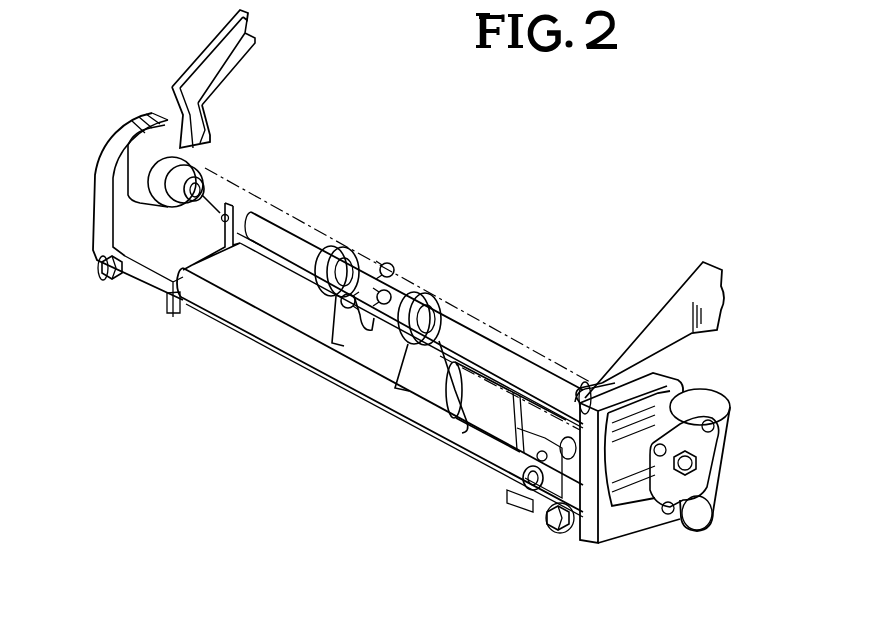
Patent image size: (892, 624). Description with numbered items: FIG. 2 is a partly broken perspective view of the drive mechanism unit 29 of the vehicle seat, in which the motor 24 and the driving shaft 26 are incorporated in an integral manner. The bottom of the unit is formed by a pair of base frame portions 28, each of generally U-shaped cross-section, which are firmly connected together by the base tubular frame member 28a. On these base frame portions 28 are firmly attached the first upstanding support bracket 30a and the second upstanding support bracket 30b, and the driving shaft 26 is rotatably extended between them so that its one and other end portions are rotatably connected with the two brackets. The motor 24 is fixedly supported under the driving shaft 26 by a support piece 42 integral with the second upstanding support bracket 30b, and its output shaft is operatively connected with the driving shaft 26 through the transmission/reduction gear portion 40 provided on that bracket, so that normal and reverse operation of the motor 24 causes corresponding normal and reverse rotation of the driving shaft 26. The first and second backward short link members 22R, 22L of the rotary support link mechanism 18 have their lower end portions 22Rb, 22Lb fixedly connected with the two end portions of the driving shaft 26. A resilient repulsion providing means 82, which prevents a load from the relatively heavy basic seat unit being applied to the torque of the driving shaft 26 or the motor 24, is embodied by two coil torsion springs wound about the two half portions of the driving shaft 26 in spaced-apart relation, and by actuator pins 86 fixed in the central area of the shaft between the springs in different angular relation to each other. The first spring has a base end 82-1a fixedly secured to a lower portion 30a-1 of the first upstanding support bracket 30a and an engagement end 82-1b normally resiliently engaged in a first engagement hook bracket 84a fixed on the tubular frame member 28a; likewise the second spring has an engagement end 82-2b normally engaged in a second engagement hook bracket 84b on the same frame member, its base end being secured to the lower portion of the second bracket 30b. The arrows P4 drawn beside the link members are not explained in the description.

The rotary support link mechanism 18 is at (714, 362).
The second backward short link member 22L is at (196, 59).
The lower end portion of second backward short link member 22Lb is at (147, 157).
The first backward short link member 22R is at (692, 330).
The lower end portion of first backward short link member 22Rb is at (584, 393).
The motor 24 is at (480, 418).
The driving shaft 26 is at (493, 348).
The base frame portion 28 is at (122, 328).
The base tubular frame member 28a is at (243, 330).
The drive mechanism unit 29 is at (340, 430).
The first upstanding support bracket 30a is at (112, 145).
The lower portion of first upstanding support bracket 30a-1 is at (250, 213).
The second upstanding support bracket 30b is at (618, 524).
The transmission/reduction gear portion 40 is at (721, 479).
The support piece 42 is at (545, 478).
The resilient repulsion providing means 82 is at (333, 245).
The base end of first coil torsion spring 82-1a is at (223, 200).
The engagement end of first coil torsion spring 82-1b is at (350, 333).
The engagement end of second coil torsion spring 82-2b is at (467, 423).
The first engagement hook bracket 84a is at (343, 340).
The second spring leg 84b is at (390, 377).
The actuator pin 86 is at (383, 267).
The rotation direction P4 is at (191, 146).